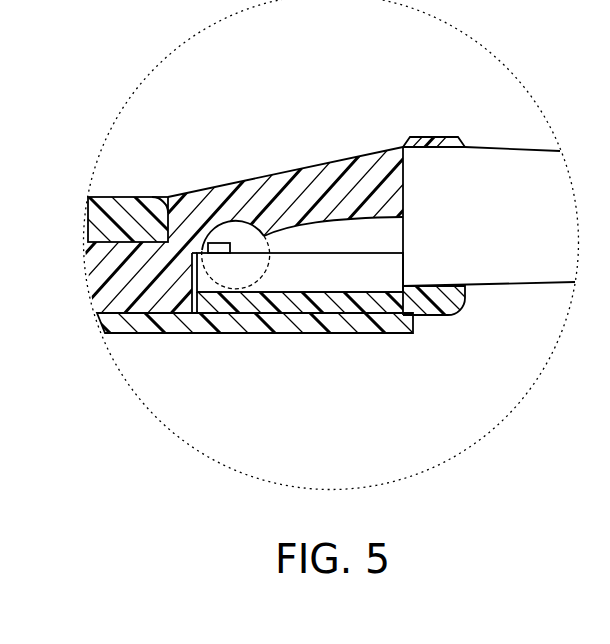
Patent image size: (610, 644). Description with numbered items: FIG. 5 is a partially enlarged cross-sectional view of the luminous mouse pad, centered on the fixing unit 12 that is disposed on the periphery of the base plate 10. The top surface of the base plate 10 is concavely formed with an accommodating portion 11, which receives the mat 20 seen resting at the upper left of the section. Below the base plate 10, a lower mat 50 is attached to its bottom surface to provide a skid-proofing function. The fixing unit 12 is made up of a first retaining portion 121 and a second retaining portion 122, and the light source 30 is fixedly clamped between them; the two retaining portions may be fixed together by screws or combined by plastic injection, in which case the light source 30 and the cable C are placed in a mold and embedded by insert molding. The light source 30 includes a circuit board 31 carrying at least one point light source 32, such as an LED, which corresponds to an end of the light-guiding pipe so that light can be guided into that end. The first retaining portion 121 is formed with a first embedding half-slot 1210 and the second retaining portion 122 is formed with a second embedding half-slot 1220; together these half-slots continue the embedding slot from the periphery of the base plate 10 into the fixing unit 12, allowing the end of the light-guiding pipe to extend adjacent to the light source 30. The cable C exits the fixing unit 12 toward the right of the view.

The base plate 10 is at (432, 133).
The accommodating portion 11 is at (166, 195).
The fixing unit 12 is at (316, 160).
The first retaining portion 121 is at (375, 173).
The first embedding half-slot 1210 is at (244, 236).
The second retaining portion 122 is at (273, 300).
The second embedding half-slot 1220 is at (212, 278).
The mat 20 is at (103, 196).
The light source 30 is at (370, 296).
The circuit board 31 is at (317, 277).
The point light source 32 is at (210, 242).
The lower mat 50 is at (133, 327).
The cable C is at (536, 148).